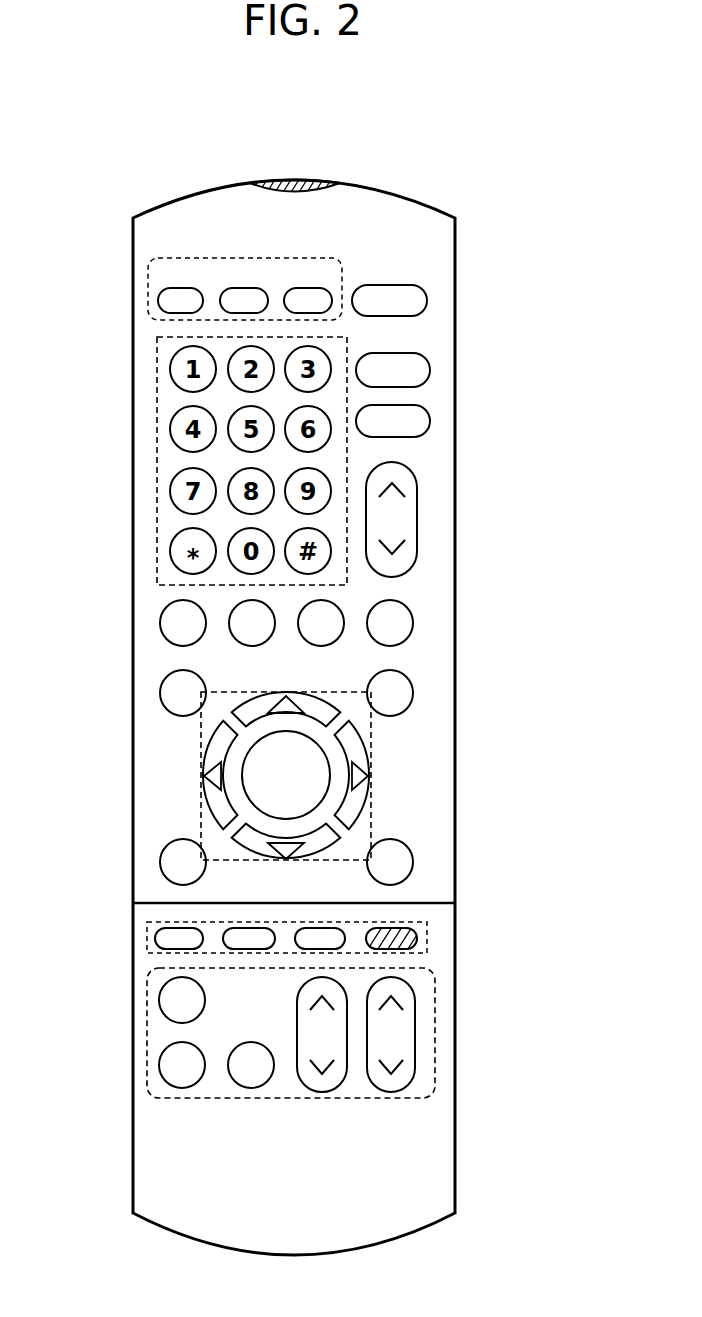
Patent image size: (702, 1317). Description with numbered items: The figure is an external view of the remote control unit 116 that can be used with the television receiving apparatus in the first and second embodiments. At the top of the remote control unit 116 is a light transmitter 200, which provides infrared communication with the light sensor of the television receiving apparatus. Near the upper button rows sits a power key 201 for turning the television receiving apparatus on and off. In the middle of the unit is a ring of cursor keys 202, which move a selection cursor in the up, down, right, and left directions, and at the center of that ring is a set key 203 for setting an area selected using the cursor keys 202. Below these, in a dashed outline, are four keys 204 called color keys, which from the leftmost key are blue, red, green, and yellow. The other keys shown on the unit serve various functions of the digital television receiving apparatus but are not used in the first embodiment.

The remote control unit 116 is at (150, 218).
The light transmitter 200 is at (305, 175).
The power key 201 is at (410, 283).
The cursor keys 202 is at (203, 776).
The set key 203 is at (328, 770).
The color keys 204 is at (148, 940).